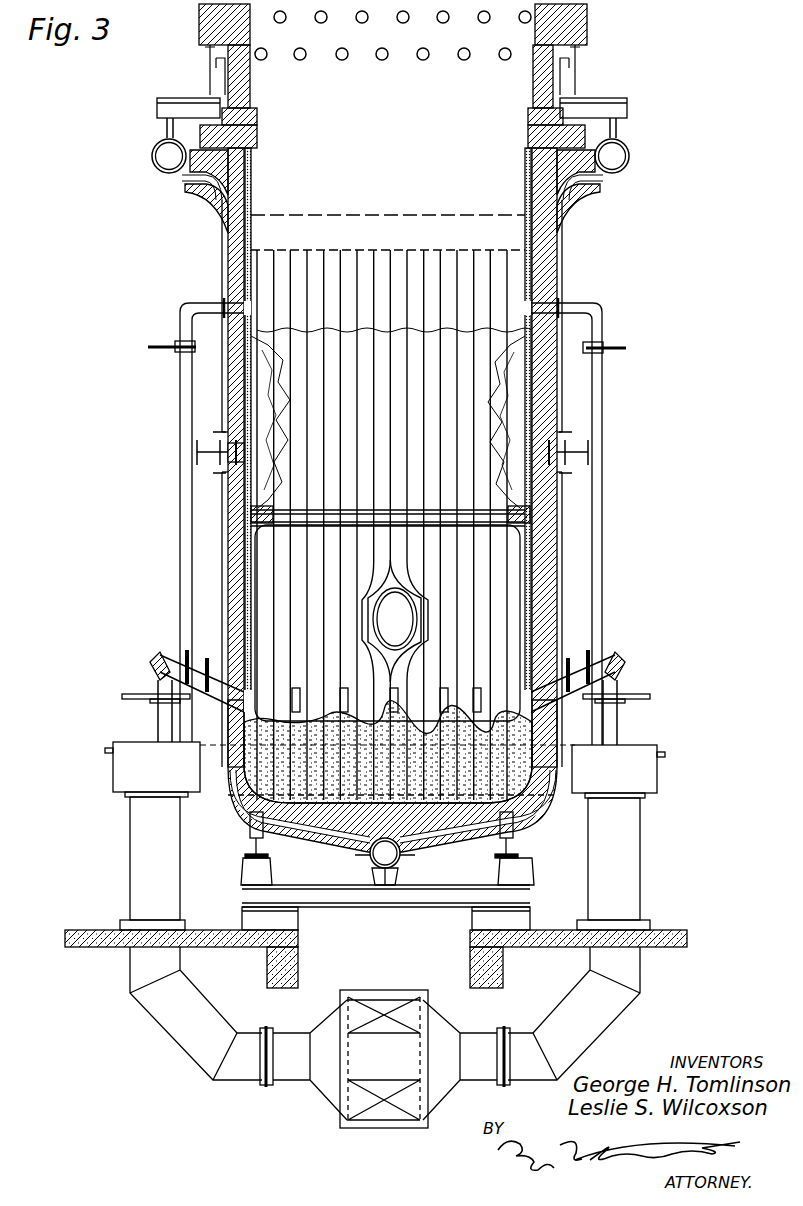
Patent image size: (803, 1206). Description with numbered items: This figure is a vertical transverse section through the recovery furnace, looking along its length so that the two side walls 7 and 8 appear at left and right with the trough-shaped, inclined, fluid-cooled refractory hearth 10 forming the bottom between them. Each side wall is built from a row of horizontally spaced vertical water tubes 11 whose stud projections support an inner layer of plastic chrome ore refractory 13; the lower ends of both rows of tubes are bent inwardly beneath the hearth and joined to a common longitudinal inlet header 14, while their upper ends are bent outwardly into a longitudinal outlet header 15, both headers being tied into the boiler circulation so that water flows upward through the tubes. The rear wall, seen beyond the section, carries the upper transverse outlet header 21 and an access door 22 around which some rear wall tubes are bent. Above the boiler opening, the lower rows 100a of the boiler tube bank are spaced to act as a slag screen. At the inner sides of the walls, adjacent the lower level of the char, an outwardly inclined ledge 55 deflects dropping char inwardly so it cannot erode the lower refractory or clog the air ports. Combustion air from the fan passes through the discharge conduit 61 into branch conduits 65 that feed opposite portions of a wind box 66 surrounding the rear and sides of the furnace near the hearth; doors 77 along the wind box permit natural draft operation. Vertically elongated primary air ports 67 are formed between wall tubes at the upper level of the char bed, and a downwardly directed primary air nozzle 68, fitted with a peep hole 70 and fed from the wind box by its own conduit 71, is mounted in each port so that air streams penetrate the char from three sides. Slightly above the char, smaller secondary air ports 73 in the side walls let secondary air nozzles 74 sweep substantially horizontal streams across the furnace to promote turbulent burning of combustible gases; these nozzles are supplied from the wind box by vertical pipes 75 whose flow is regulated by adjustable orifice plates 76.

The side wall 7 is at (214, 546).
The side wall 8 is at (558, 540).
The hearth 10 is at (387, 776).
The water tubes 11 is at (248, 596).
The plastic chrome ore refractory 13 is at (249, 626).
The inlet header 14 is at (403, 858).
The outlet header 15 is at (152, 160).
The upper transverse outlet header 21 is at (402, 214).
The access door 22 is at (395, 619).
The ledge 55 is at (315, 512).
The discharge conduit 61 is at (380, 1128).
The branch conduits 65 is at (170, 1028).
The wind box 66 is at (660, 768).
The primary air ports 67 is at (336, 701).
The primary air nozzle 68 is at (207, 664).
The peep hole 70 is at (621, 658).
The conduit 71 is at (619, 724).
The secondary air ports 73 is at (526, 310).
The secondary air nozzles 74 is at (228, 301).
The vertical pipes 75 is at (603, 381).
The adjustable orifice plates 76 is at (606, 345).
The doors 77 is at (108, 758).
The lower rows of tube bank 100a is at (318, 66).